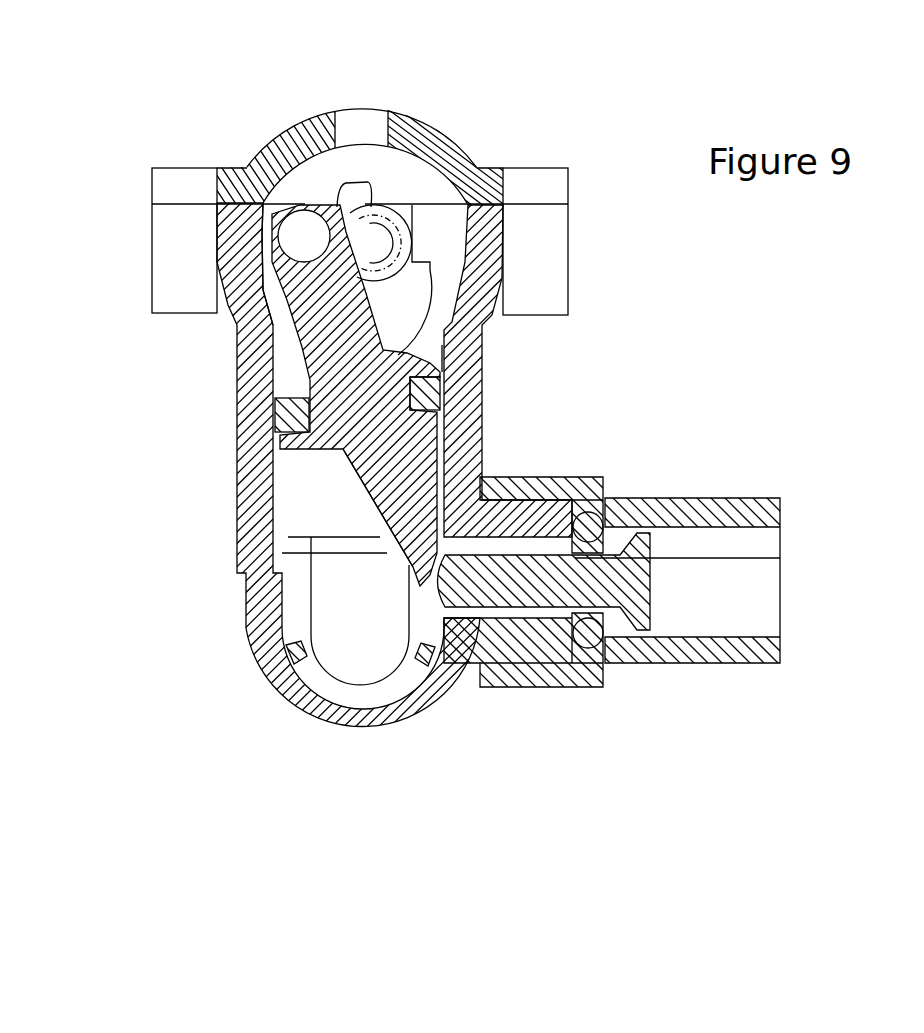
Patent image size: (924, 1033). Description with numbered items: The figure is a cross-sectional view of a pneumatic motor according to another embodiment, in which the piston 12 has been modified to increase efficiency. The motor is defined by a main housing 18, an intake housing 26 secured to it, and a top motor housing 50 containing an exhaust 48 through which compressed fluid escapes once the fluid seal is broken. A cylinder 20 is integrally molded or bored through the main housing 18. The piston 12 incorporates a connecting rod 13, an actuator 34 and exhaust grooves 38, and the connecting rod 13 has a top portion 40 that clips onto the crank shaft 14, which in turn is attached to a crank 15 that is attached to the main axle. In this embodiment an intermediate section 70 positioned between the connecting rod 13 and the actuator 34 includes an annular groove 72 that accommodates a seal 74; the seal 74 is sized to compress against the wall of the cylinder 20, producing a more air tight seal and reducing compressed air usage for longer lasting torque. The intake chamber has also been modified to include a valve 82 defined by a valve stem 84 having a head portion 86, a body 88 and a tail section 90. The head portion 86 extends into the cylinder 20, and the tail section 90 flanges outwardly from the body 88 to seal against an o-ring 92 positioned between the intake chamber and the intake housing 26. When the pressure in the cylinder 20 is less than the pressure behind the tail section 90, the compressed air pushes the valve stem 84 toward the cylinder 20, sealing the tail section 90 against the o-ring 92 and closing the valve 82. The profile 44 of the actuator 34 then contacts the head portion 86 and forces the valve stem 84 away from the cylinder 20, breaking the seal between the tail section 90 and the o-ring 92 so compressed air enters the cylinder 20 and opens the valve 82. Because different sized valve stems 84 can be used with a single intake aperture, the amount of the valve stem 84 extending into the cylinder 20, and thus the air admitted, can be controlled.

The piston 12 is at (352, 228).
The connecting rod 13 is at (310, 316).
The crank shaft 14 is at (300, 230).
The crank 15 is at (343, 195).
The main housing 18 is at (557, 253).
The cylinder 20 is at (277, 490).
The intake housing 26 is at (660, 650).
The actuator 34 is at (372, 467).
The exhaust grooves 38 is at (440, 347).
The top portion 40 is at (273, 216).
The profile 44 is at (430, 563).
The exhaust 48 is at (360, 120).
The top motor housing 50 is at (452, 157).
The intermediate section 70 is at (440, 413).
The annular groove 72 is at (307, 412).
The seal 74 is at (440, 393).
The valve 82 is at (430, 603).
The valve stem 84 is at (547, 607).
The head portion 86 is at (443, 602).
The body 88 is at (570, 590).
The tail section 90 is at (780, 558).
The o-ring 92 is at (590, 523).